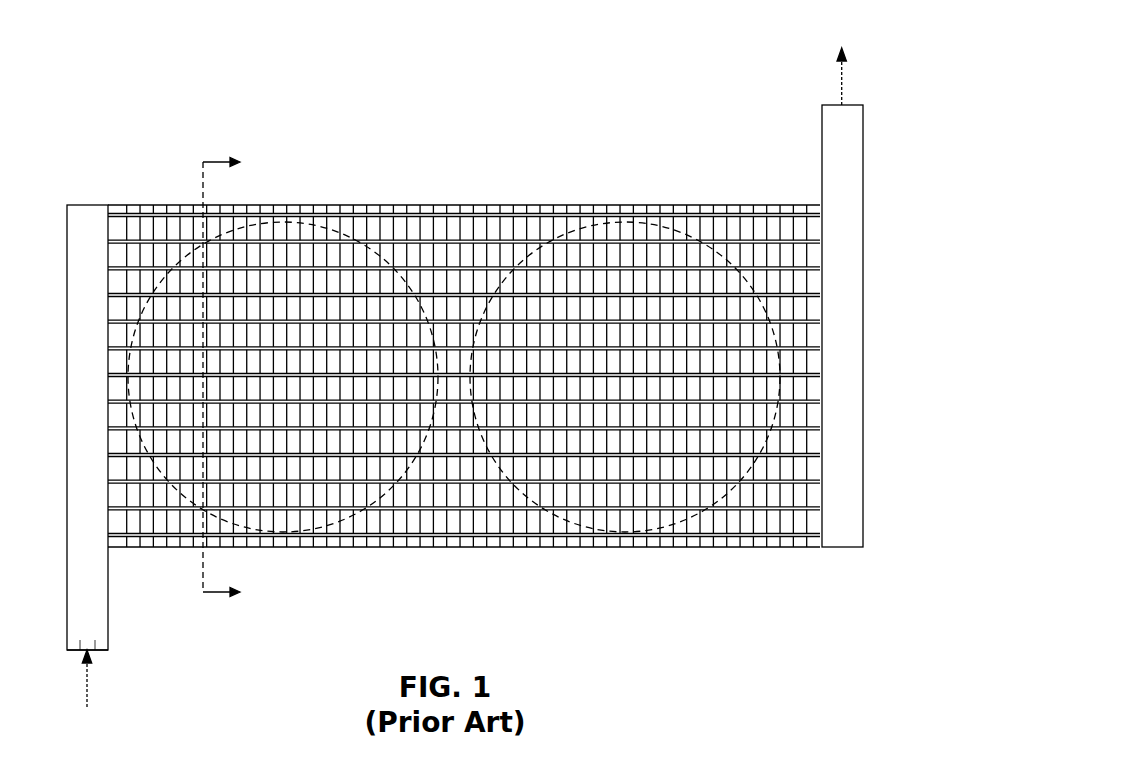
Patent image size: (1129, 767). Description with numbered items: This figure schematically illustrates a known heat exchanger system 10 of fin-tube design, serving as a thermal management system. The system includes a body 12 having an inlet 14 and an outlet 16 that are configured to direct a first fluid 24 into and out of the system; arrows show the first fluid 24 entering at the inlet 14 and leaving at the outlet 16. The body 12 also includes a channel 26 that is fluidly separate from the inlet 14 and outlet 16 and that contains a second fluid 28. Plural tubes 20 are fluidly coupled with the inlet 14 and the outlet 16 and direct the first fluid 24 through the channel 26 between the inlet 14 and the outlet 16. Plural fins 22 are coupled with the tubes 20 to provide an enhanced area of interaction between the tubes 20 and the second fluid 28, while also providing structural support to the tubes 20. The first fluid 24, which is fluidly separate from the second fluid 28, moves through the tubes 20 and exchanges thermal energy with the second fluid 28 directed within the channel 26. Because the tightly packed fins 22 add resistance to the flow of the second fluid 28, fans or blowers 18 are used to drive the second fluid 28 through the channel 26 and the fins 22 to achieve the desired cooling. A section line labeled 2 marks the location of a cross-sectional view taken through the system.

The heat exchanger system 10 is at (868, 38).
The body 12 is at (87, 205).
The inlet 14 is at (75, 653).
The outlet 16 is at (832, 103).
The fans or blowers 18 is at (310, 520).
The tubes 20 is at (460, 268).
The fins 22 is at (427, 543).
The first fluid 24 is at (845, 80).
The channel 26 is at (537, 212).
The second fluid 28 is at (472, 522).
The section line 2- 2 is at (233, 378).